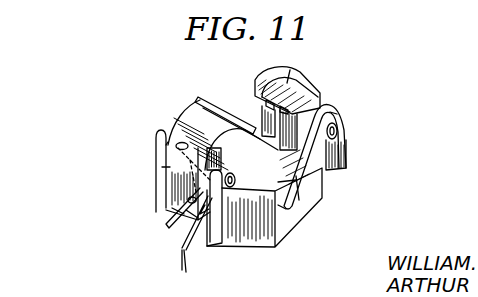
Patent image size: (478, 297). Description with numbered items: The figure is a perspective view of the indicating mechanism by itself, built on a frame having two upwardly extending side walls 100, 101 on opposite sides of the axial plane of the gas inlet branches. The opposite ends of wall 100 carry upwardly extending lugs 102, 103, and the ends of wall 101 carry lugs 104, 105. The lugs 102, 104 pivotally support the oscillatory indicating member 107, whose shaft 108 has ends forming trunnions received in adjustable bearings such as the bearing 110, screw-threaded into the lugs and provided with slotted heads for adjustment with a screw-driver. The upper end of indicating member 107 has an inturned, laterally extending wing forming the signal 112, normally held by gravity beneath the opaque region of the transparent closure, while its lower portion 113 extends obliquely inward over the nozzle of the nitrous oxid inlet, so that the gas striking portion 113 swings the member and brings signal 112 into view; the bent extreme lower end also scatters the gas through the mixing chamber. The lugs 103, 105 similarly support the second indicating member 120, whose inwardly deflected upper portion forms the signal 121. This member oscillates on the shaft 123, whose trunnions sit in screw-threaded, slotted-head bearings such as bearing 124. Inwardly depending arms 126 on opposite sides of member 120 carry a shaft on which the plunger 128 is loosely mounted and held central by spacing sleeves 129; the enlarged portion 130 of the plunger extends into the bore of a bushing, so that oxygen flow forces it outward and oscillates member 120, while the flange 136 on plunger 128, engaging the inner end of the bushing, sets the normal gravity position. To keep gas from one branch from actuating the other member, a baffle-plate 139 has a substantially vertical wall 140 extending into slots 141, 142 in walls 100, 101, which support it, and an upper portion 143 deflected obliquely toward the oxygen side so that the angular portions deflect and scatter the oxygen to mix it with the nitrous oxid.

The side wall 100 is at (289, 232).
The side wall 101 is at (162, 195).
The lug 102 is at (334, 116).
The lug 103 is at (228, 181).
The lug 104 is at (262, 77).
The lug 105 is at (158, 133).
The oscillatory indicating member 107 is at (325, 105).
The shaft 108 is at (315, 102).
The adjustable bearing 110 is at (338, 131).
The signal 112 is at (288, 82).
The lower portion 113 is at (342, 163).
The indicating member 120 is at (155, 152).
The signal 121 is at (181, 110).
The shaft 123 is at (162, 167).
The bearing 124 is at (222, 244).
The inwardly depending arm 126 is at (174, 211).
The plunger 128 is at (187, 229).
The spacing sleeve 129 is at (187, 211).
The enlarged portion 130 is at (181, 250).
The flange 136 is at (183, 270).
The baffle-plate 139 is at (292, 179).
The vertical wall 140 is at (298, 198).
The slot 141 is at (285, 208).
The slot 142 is at (243, 158).
The upper portion 143 is at (222, 103).